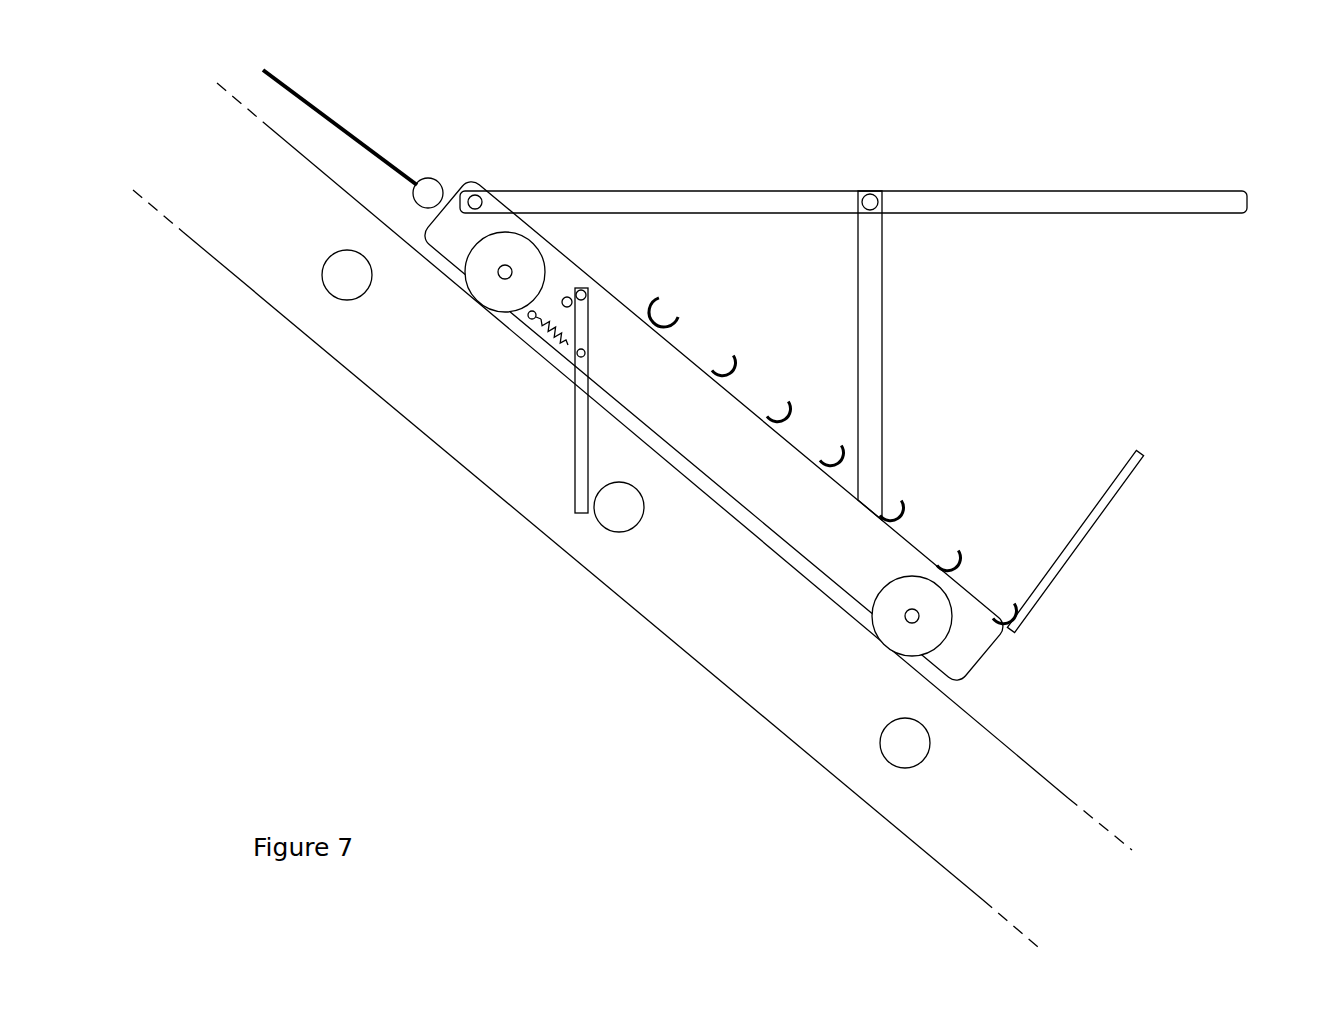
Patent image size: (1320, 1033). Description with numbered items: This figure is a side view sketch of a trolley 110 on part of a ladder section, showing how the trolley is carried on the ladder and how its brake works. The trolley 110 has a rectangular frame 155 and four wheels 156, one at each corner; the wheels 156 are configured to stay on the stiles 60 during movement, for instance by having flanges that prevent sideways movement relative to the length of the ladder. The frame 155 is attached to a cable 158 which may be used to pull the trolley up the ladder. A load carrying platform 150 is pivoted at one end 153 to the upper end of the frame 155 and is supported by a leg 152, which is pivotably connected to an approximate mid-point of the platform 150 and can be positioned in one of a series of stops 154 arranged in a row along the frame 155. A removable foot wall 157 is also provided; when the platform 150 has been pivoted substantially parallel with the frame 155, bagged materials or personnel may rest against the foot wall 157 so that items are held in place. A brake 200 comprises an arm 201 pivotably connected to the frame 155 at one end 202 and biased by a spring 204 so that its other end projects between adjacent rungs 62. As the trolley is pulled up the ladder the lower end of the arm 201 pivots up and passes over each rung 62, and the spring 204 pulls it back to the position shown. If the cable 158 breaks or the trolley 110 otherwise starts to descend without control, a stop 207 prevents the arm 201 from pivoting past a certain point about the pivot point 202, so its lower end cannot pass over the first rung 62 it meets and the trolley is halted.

The trolley 110 is at (1215, 98).
The stiles 60 is at (752, 628).
The rungs 62 is at (340, 282).
The load carrying platform 150 is at (1035, 202).
The leg 152 is at (873, 283).
The pivoted end 153 is at (482, 195).
The stops 154 is at (737, 368).
The frame 155 is at (772, 486).
The wheels 156 is at (493, 287).
The removable foot wall 157 is at (1097, 513).
The cable 158 is at (363, 135).
The brake 200 is at (590, 337).
The arm 201 is at (585, 430).
The pivot point 202 is at (586, 293).
The spring 204 is at (545, 333).
The stop 207 is at (563, 297).